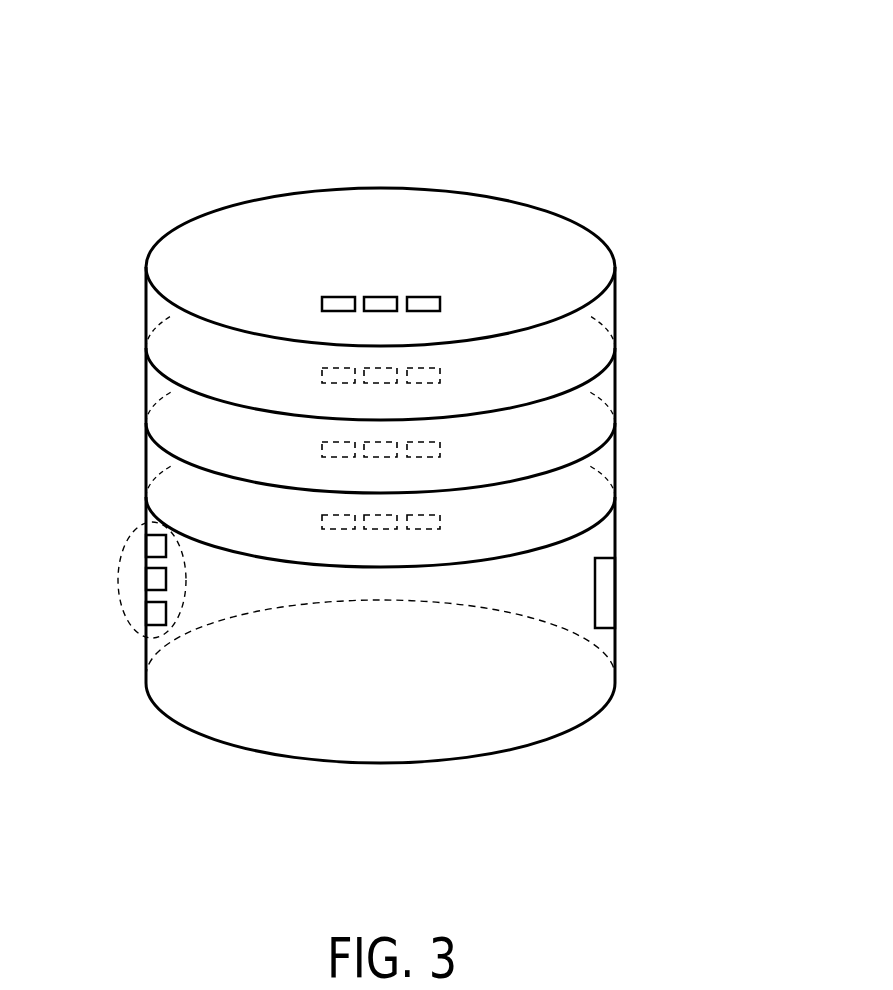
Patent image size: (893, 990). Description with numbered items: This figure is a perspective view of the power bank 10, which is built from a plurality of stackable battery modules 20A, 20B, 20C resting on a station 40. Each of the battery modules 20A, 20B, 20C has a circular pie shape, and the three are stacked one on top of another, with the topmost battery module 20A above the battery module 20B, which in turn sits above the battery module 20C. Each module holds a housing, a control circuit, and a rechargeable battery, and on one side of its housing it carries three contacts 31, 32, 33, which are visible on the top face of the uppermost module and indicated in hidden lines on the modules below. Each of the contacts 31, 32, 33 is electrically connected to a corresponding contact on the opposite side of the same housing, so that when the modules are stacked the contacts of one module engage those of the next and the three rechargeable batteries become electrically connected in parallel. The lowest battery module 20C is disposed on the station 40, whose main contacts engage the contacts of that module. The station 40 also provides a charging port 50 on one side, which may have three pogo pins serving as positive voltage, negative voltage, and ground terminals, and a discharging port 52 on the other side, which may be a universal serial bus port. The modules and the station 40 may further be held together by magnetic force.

The power bank 10 is at (645, 58).
The battery module 20A is at (590, 333).
The battery module 20B is at (590, 412).
The battery module 20C is at (590, 485).
The contact 31 is at (340, 302).
The contact 32 is at (382, 301).
The contact 33 is at (424, 302).
The station 40 is at (590, 684).
The charging port 50 is at (121, 560).
The discharging port 52 is at (607, 594).